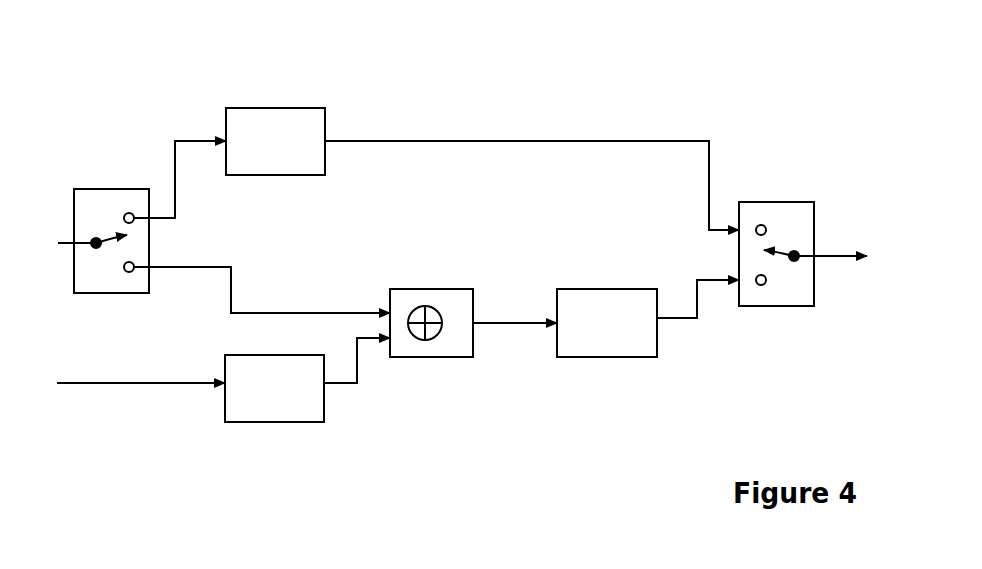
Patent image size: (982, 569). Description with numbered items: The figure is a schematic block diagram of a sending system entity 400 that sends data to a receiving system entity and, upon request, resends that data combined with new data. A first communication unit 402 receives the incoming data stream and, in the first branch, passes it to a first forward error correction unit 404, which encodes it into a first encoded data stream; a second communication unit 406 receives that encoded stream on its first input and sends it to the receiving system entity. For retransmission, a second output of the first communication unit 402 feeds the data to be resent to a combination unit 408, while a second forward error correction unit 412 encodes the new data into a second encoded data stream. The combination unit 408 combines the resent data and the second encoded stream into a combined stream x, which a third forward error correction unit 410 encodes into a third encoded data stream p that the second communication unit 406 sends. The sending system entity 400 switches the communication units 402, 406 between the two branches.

The sending system entity 400 is at (630, 82).
The first communication unit 402 is at (130, 189).
The first forward error correction unit 404 is at (325, 119).
The second communication unit 406 is at (792, 202).
The combination unit 408 is at (448, 289).
The third forward error correction unit 410 is at (603, 289).
The second forward error correction unit 412 is at (324, 412).